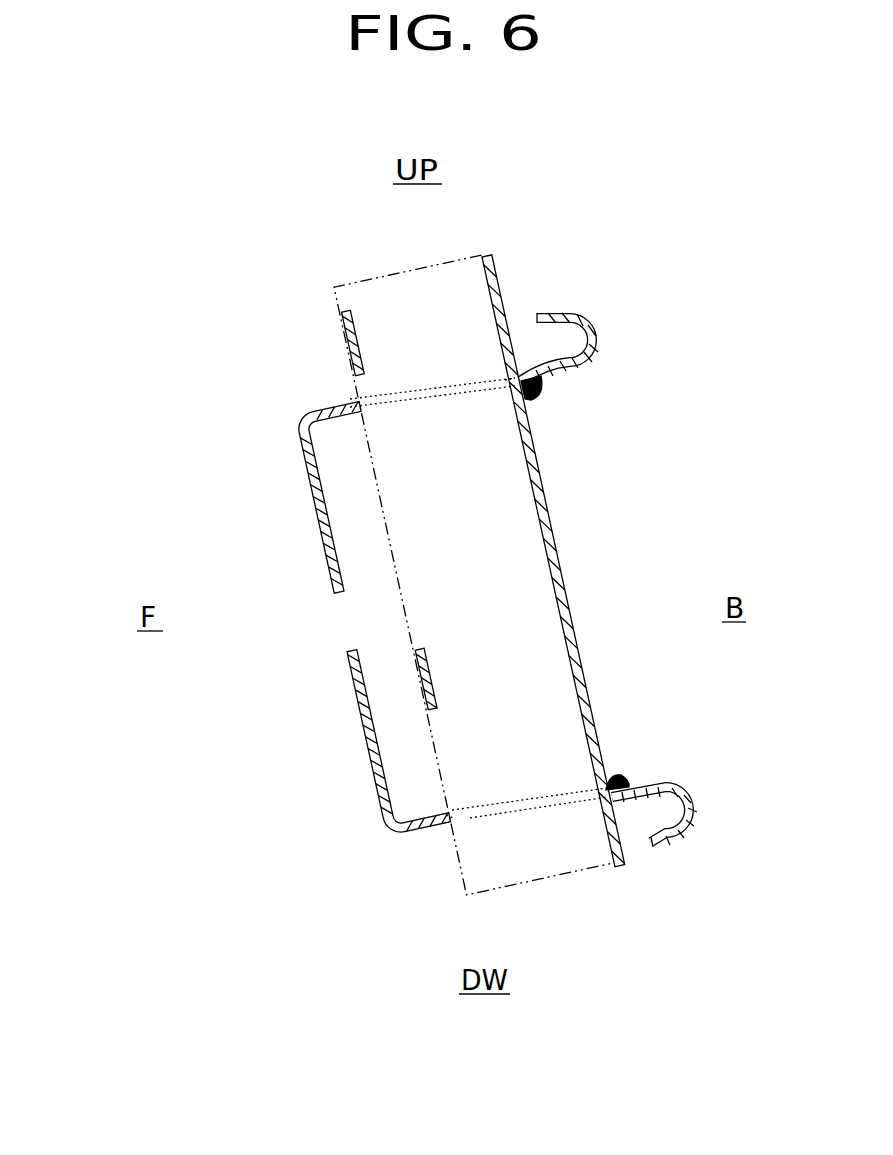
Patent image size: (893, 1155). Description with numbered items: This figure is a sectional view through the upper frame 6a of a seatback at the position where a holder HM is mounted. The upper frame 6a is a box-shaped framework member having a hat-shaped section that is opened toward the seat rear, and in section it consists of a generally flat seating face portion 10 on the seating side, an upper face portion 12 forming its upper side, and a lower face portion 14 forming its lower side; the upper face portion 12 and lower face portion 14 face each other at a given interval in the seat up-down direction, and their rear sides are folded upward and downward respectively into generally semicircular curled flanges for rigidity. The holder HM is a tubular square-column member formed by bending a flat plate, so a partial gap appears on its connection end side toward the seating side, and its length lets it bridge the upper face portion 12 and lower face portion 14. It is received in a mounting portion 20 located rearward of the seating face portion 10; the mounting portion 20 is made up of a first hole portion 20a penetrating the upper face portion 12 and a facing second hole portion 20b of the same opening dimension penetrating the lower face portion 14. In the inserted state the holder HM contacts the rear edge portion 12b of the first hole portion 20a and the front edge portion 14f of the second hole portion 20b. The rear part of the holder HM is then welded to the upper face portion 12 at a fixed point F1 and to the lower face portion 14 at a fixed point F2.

The holder HM is at (500, 292).
The upper frame 6a is at (156, 403).
The seating face portion 10 is at (297, 460).
The upper face portion 12 is at (338, 403).
The lower face portion 14 is at (422, 830).
The rear edge portion 12b is at (510, 382).
The front edge portion 14f is at (453, 818).
The mounting portion 20 is at (479, 598).
The first hole portion 20a is at (432, 393).
The second hole portion 20b is at (530, 808).
The fixed point F1 is at (539, 394).
The fixed point F2 is at (623, 773).